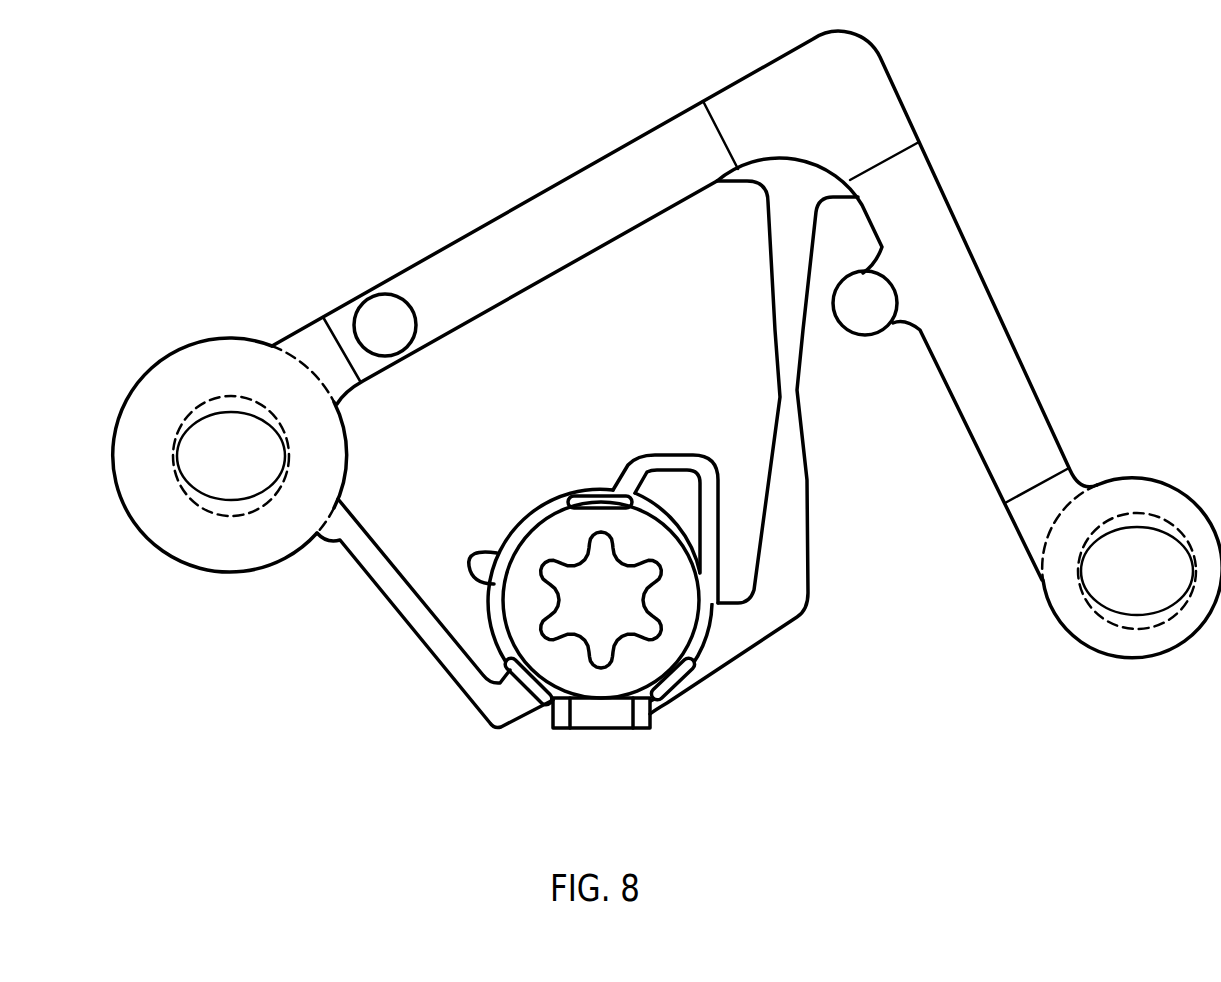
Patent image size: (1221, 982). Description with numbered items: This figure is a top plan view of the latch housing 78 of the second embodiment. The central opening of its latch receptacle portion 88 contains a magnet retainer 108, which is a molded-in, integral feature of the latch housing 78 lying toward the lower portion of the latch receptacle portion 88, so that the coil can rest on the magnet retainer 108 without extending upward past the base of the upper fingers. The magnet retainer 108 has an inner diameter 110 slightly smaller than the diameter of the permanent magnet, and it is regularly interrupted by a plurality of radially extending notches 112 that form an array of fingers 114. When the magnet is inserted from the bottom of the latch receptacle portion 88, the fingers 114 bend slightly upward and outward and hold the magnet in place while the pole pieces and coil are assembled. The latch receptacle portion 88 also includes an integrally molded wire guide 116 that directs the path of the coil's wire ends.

The latch housing 78 is at (517, 228).
The latch receptacle portion 88 is at (492, 617).
The magnet retainer 108 is at (690, 612).
The inner diameter 110 is at (573, 628).
The radially extending notches 112 is at (650, 633).
The fingers 114 is at (573, 650).
The wire guide 116 is at (670, 483).